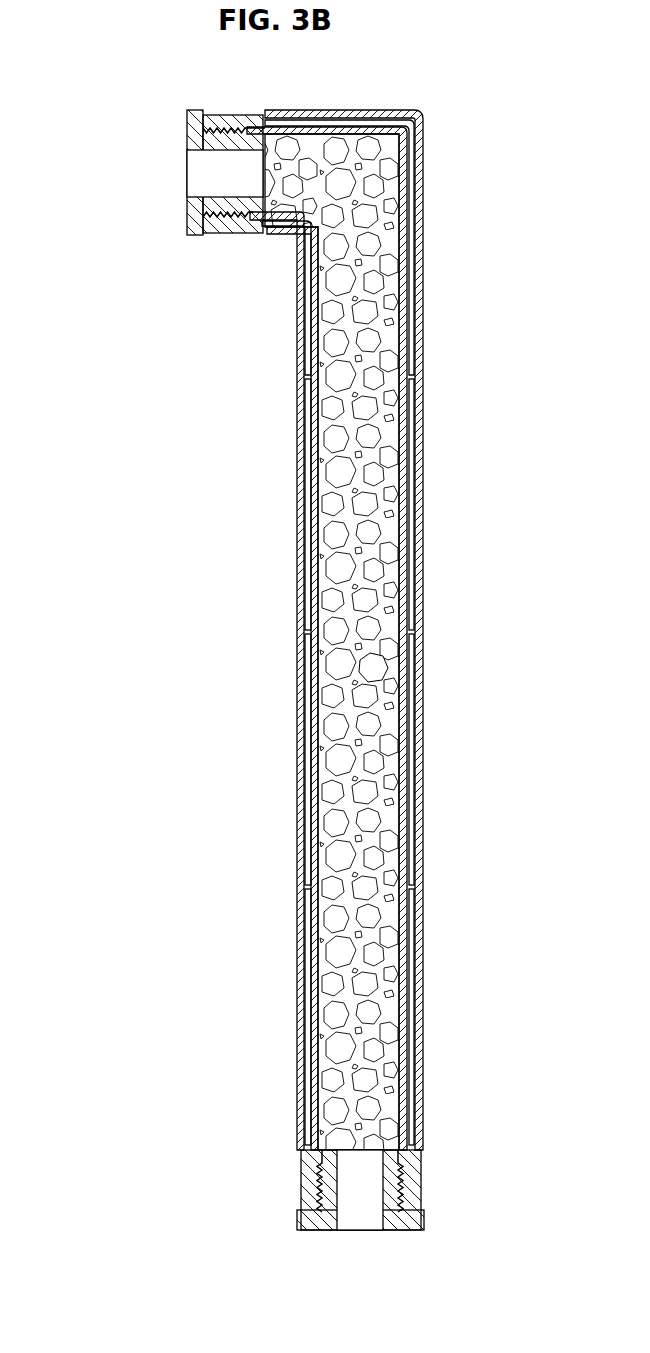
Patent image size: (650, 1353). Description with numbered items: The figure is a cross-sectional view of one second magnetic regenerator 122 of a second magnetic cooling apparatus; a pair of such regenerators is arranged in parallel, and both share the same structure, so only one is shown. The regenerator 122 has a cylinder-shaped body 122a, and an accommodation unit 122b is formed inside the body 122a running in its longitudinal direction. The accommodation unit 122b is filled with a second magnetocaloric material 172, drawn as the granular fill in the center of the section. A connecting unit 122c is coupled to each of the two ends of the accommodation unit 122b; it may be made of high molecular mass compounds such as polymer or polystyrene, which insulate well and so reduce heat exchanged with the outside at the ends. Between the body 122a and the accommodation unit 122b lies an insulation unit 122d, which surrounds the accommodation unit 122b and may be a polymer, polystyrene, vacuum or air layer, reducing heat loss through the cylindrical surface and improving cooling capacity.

The second magnetic regenerator 122 is at (73, 642).
The cylinder-shaped body 122a is at (408, 332).
The accommodation unit 122b is at (345, 457).
The connecting unit 122c is at (186, 228).
The insulation unit 122d is at (412, 537).
The second magnetocaloric material 172 is at (372, 667).